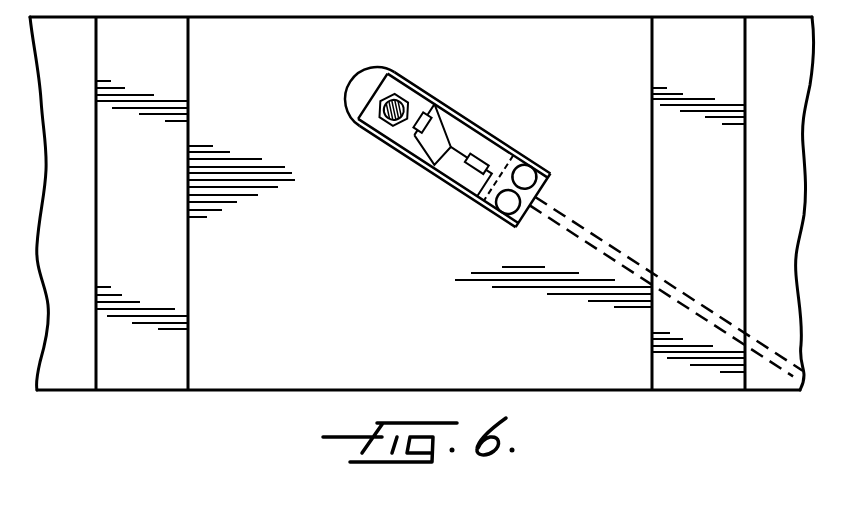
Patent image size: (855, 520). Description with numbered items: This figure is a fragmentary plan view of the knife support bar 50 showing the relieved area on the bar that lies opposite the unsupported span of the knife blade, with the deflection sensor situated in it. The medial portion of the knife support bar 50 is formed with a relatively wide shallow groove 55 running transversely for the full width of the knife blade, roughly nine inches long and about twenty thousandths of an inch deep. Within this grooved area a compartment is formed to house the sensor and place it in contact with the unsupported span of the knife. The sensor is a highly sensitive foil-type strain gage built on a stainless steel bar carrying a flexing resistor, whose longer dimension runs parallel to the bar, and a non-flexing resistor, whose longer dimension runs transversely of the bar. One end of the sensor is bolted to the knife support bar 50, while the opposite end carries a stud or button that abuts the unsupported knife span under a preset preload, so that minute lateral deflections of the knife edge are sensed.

The knife support bar 50 is at (276, 400).
The groove 55 is at (205, 366).